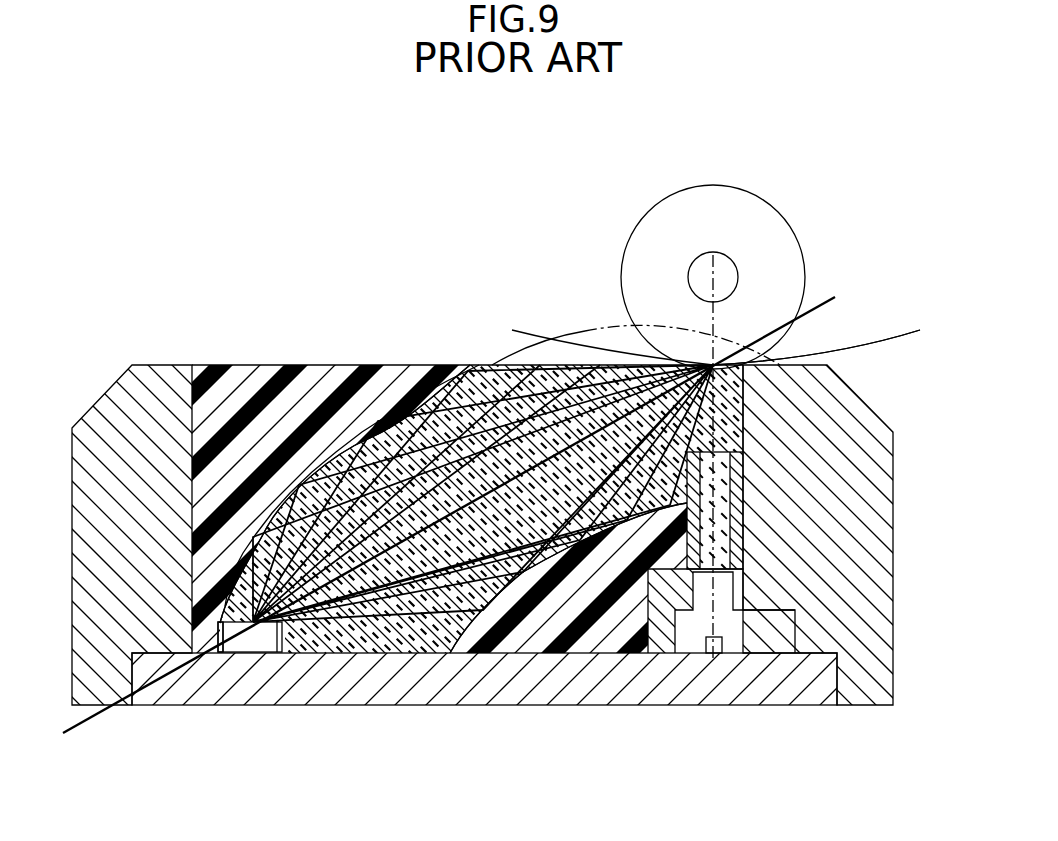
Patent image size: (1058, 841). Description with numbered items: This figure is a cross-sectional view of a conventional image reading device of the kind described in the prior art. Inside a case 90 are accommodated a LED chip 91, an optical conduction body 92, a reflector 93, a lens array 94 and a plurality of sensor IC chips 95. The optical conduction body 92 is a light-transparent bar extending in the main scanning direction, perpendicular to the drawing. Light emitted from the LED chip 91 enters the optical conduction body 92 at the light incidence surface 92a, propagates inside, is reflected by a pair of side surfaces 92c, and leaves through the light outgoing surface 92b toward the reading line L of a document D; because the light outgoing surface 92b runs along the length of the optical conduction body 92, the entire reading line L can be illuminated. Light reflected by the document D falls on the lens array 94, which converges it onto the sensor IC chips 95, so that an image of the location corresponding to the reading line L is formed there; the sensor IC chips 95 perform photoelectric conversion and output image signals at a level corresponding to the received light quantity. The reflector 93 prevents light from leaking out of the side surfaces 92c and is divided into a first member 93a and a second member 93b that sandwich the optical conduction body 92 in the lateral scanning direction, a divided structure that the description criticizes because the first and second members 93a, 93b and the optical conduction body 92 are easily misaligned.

The case 90 is at (145, 383).
The LED chip 91 is at (263, 643).
The optical conduction body 92 is at (492, 365).
The light incidence surface 92a is at (227, 643).
The light outgoing surface 92b is at (560, 365).
The side surfaces 92c is at (397, 405).
The reflector 93 is at (266, 360).
The first member 93a is at (320, 383).
The second member 93b is at (600, 653).
The lens array 94 is at (745, 520).
The sensor IC chips 95 is at (715, 655).
The reading line L is at (716, 365).
The document D is at (893, 337).